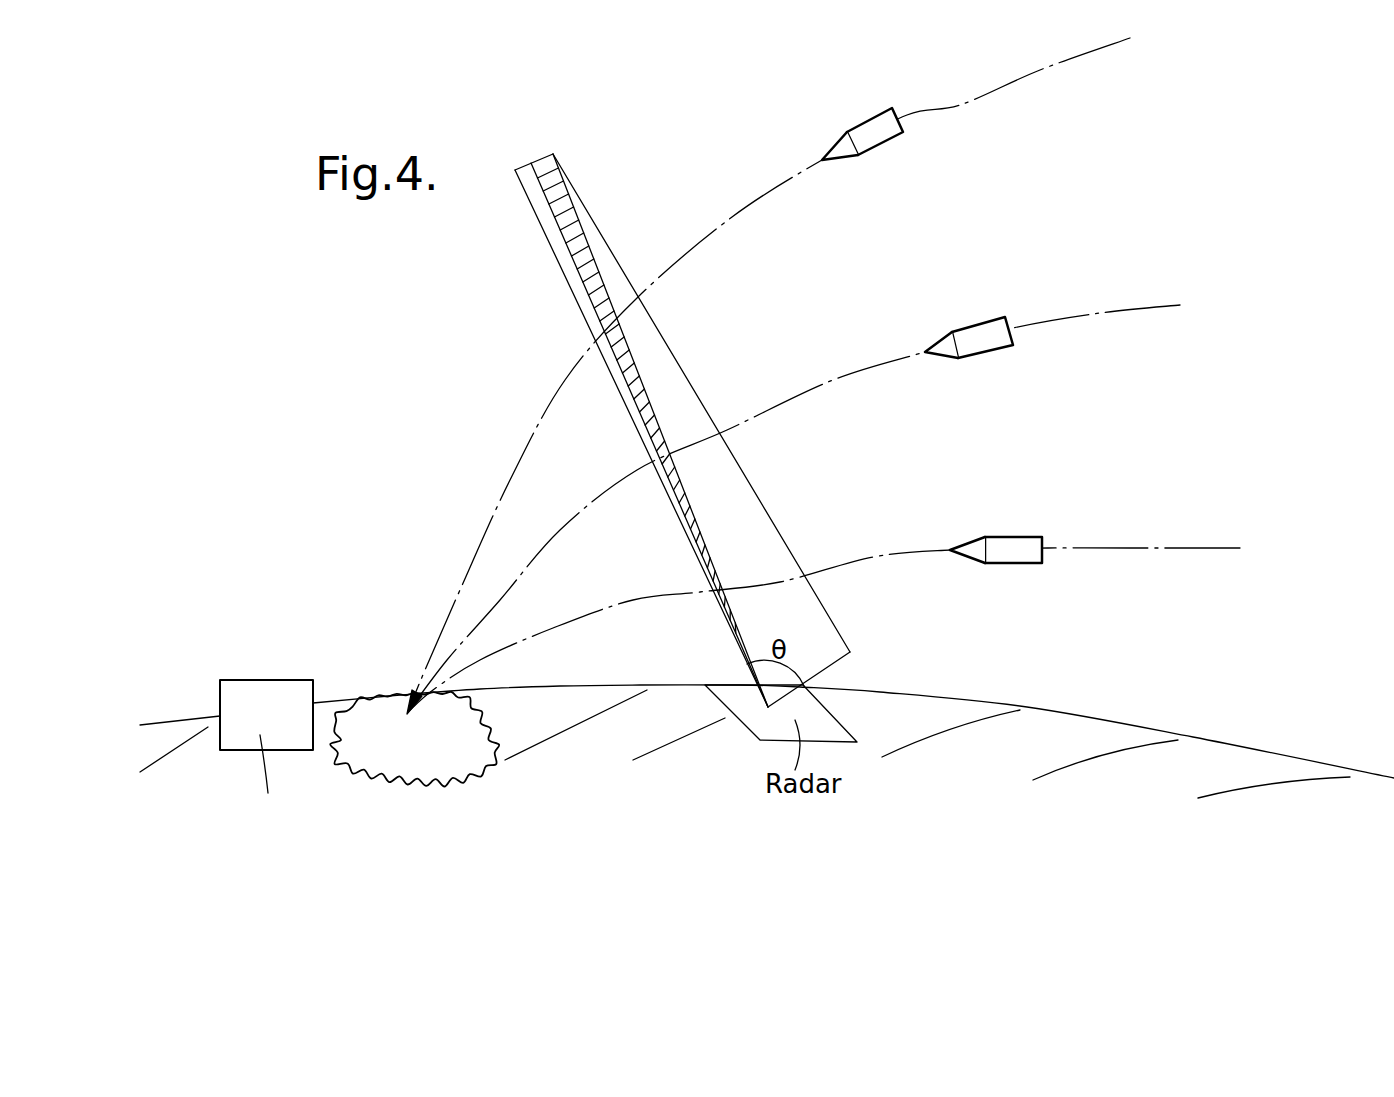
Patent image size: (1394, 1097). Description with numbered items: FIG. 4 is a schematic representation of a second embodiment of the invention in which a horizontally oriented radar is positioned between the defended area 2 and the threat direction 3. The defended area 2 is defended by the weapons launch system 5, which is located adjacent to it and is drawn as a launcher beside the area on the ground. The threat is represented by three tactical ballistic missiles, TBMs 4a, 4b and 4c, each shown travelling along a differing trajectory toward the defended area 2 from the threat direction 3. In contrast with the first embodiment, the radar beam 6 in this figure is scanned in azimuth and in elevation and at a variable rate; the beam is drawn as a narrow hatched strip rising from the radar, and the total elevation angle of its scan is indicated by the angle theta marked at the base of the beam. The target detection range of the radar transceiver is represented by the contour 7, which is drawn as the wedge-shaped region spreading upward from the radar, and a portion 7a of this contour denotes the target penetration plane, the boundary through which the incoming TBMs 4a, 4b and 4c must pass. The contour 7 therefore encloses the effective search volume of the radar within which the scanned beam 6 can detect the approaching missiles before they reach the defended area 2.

The defended area 2 is at (463, 755).
The threat direction 3 is at (1108, 415).
The TBM 4a is at (851, 132).
The TBM 4b is at (963, 330).
The TBM 4c is at (1002, 535).
The weapons launch system 5 is at (270, 687).
The radar beam 6 is at (578, 262).
The contour 7 is at (577, 179).
The portion of the contour 7a is at (672, 352).